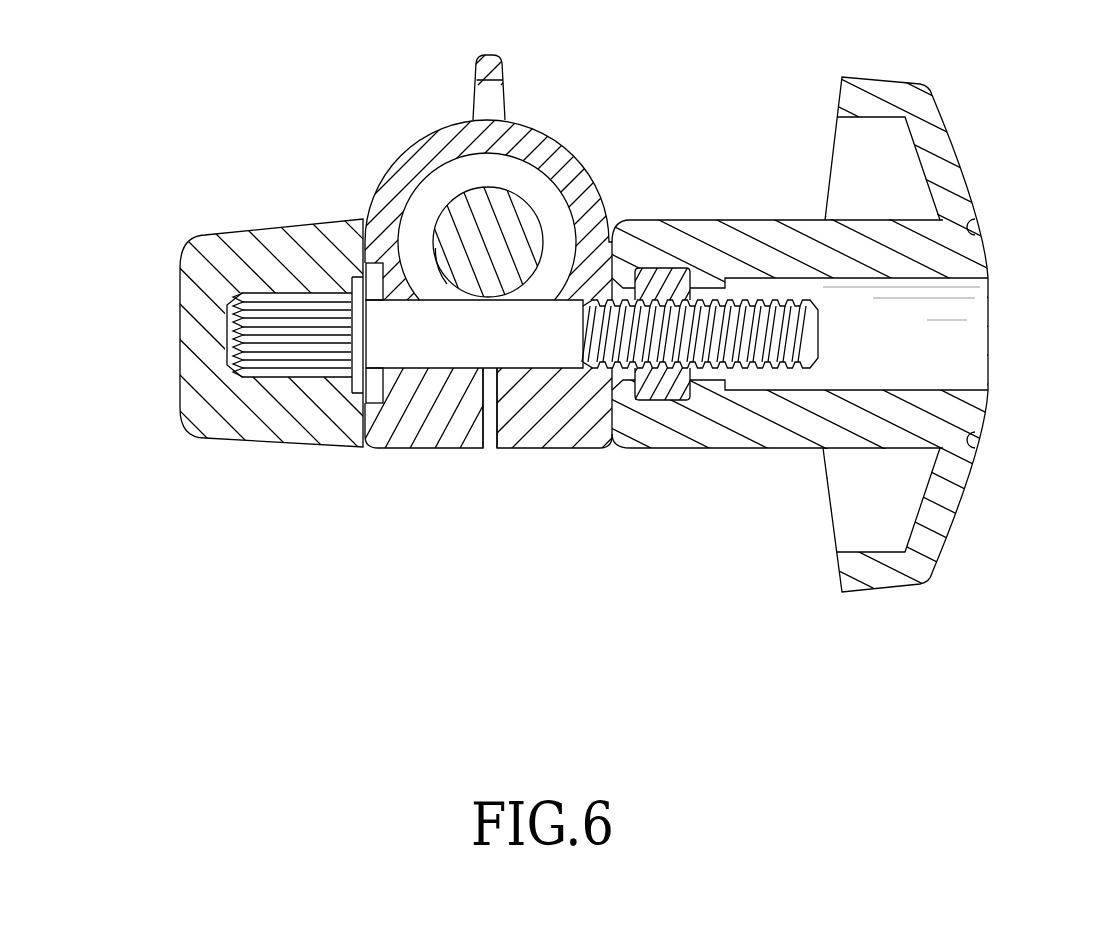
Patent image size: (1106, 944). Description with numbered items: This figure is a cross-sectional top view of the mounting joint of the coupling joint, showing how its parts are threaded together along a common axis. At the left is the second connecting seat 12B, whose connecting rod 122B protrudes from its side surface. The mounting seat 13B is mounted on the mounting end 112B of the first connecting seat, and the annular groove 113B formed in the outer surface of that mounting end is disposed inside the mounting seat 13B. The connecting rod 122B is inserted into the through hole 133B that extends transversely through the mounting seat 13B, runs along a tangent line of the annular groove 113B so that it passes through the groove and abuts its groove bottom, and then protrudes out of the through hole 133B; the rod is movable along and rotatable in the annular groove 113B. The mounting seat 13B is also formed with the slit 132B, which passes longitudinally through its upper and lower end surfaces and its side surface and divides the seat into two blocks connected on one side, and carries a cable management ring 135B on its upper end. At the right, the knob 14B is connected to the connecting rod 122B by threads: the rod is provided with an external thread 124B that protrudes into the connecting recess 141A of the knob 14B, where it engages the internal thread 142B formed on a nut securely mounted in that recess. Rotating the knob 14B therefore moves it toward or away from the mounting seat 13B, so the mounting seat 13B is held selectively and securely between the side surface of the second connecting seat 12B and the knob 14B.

The second connecting seat 12B is at (225, 403).
The mounting seat 13B is at (547, 143).
The mounting end 112B is at (463, 208).
The annular groove 113B is at (417, 210).
The connecting rod 122B is at (515, 352).
The external thread 124B is at (798, 337).
The slit 132B is at (484, 447).
The through hole 133B is at (447, 368).
The cable management ring 135B is at (487, 71).
The knob 14B is at (955, 182).
The connecting recess 141A is at (698, 378).
The internal thread 142B is at (648, 306).